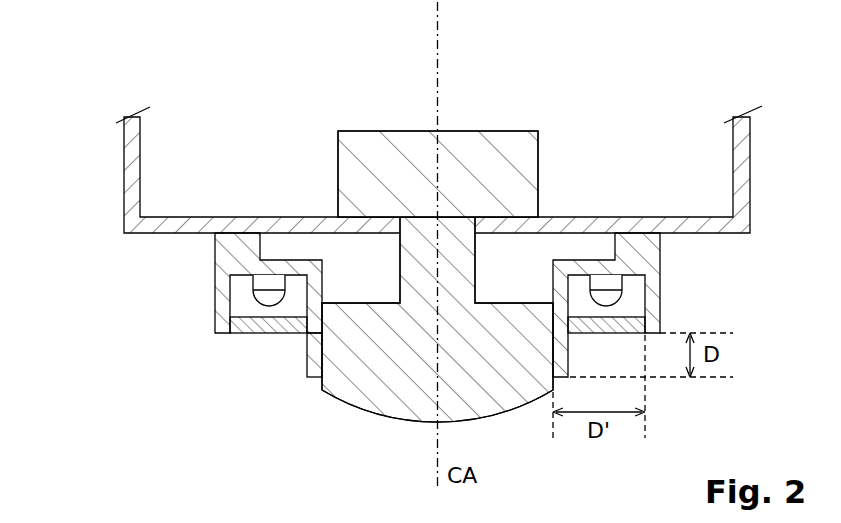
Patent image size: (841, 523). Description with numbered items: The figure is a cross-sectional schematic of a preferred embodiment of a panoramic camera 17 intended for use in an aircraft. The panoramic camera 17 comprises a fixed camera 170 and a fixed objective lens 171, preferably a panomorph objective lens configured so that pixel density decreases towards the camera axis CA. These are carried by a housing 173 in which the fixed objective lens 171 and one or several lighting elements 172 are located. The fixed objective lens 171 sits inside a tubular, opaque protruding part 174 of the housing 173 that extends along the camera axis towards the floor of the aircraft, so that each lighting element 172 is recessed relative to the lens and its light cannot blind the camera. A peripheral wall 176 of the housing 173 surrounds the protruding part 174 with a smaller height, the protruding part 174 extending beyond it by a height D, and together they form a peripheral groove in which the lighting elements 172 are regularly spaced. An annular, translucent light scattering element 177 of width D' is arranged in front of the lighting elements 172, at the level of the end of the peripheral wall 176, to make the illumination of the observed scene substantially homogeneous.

The panoramic camera 17 is at (107, 248).
The fixed camera 170 is at (398, 177).
The fixed objective lens 171 is at (410, 390).
The lighting element 172 is at (263, 297).
The housing 173 is at (233, 249).
The protruding part 174 is at (312, 367).
The peripheral wall 176 is at (653, 319).
The light scattering element 177 is at (245, 328).